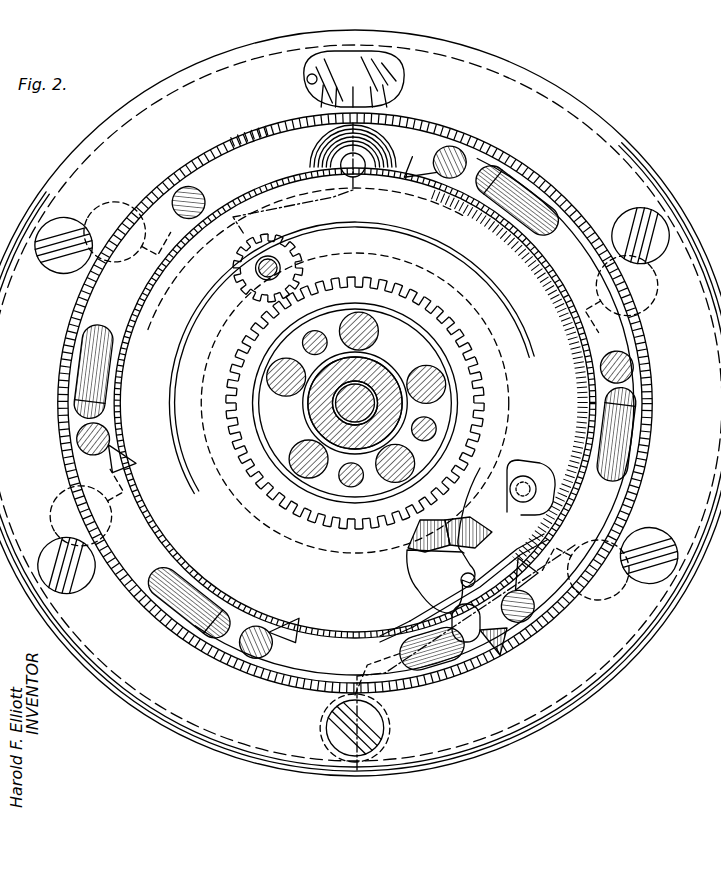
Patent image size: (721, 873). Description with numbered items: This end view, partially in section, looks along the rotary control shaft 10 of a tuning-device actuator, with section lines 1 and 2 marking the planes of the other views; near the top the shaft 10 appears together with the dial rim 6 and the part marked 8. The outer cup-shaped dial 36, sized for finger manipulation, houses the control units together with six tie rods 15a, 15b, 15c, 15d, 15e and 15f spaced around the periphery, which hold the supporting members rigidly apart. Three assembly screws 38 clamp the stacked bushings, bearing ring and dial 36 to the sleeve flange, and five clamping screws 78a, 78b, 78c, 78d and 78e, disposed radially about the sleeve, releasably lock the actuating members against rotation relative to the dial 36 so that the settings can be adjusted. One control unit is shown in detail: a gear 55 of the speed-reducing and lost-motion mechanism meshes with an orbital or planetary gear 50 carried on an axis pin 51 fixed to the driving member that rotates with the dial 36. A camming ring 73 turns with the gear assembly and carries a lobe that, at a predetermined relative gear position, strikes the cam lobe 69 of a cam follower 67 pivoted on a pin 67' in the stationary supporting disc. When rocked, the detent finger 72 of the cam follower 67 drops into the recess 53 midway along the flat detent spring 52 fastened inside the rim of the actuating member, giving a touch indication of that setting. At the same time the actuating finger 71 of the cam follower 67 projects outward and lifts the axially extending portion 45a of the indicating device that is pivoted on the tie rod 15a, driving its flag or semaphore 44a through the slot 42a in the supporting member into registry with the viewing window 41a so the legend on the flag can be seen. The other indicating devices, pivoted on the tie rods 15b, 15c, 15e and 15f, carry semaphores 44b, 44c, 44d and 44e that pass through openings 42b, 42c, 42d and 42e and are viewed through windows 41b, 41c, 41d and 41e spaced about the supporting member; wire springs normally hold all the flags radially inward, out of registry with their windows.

The section line 1- 1 is at (318, 14).
The section line 2- 2 is at (332, 786).
The pin 6 is at (310, 84).
The housing boss 8 is at (354, 79).
The rotary control shaft 10 is at (360, 80).
The tie rod 15a is at (536, 619).
The tie rod 15b is at (252, 660).
The tie rod 15c is at (78, 440).
The tie rod 15d is at (186, 183).
The tie rod 15e is at (458, 146).
The tie rod 15f is at (630, 366).
The cup-shaped dial 36 is at (247, 125).
The assembly screws 38 is at (313, 332).
The viewing window 41a is at (328, 735).
The viewing window 41b is at (86, 588).
The viewing window 41c is at (71, 216).
The viewing window 41d is at (628, 216).
The viewing window 41e is at (651, 545).
The slot 42a is at (410, 651).
The opening 42b is at (196, 582).
The opening 42c is at (118, 345).
The opening 42d is at (549, 198).
The opening 42e is at (641, 436).
The semaphore 44a is at (440, 700).
The semaphore 44b is at (150, 624).
The semaphore 44c is at (140, 288).
The semaphore 44d is at (645, 291).
The semaphore 44e is at (612, 603).
The axially extending portion 45a is at (502, 660).
The planetary gear 50 is at (240, 257).
The axis pin 51 is at (258, 267).
The detent spring 52 is at (428, 607).
The recess 53 is at (476, 580).
The gear 55 is at (393, 290).
The cam follower 67 is at (475, 508).
The pin 67' is at (545, 483).
The cam lobe 69 is at (464, 534).
The actuating finger 71 is at (460, 629).
The detent finger 72 is at (462, 579).
The cam ring 73 is at (424, 536).
The clamping screw 78a is at (402, 462).
The clamping screw 78b is at (300, 452).
The clamping screw 78c is at (283, 371).
The clamping screw 78d is at (373, 331).
The clamping screw 78e is at (424, 373).